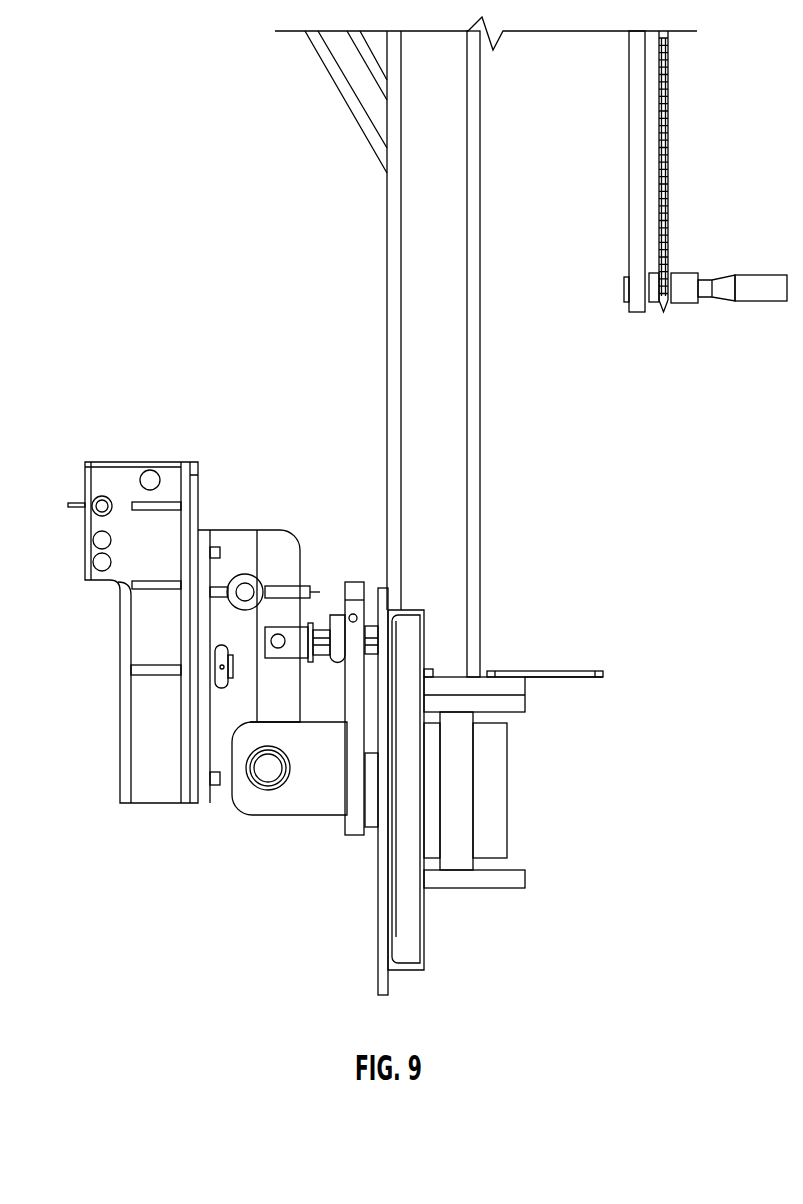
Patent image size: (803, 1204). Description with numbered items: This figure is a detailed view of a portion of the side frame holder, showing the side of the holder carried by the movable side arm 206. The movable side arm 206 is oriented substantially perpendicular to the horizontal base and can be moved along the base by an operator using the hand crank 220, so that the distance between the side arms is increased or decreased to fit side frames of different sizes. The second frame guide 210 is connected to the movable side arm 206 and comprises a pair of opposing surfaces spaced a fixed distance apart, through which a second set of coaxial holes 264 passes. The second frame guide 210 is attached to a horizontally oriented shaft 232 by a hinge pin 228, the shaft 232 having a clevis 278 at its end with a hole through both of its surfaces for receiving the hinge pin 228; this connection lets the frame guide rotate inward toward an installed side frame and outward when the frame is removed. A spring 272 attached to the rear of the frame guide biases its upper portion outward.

The movable side arm 206 is at (460, 497).
The hand crank 220 is at (765, 295).
The second frame guide 210 is at (152, 698).
The second set of coaxial holes 264 is at (85, 548).
The spring 272 is at (288, 588).
The clevis 278 is at (310, 802).
The hinge pin 228 is at (263, 778).
The shaft 232 is at (372, 792).